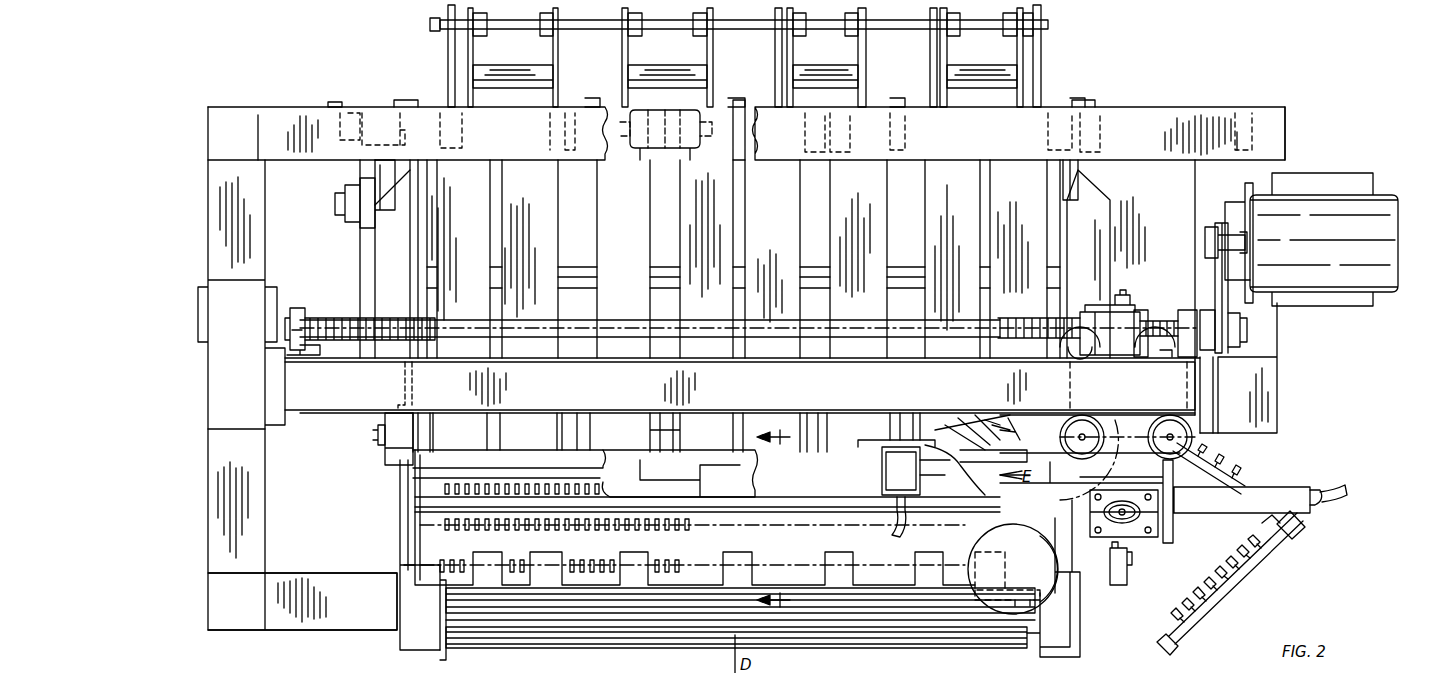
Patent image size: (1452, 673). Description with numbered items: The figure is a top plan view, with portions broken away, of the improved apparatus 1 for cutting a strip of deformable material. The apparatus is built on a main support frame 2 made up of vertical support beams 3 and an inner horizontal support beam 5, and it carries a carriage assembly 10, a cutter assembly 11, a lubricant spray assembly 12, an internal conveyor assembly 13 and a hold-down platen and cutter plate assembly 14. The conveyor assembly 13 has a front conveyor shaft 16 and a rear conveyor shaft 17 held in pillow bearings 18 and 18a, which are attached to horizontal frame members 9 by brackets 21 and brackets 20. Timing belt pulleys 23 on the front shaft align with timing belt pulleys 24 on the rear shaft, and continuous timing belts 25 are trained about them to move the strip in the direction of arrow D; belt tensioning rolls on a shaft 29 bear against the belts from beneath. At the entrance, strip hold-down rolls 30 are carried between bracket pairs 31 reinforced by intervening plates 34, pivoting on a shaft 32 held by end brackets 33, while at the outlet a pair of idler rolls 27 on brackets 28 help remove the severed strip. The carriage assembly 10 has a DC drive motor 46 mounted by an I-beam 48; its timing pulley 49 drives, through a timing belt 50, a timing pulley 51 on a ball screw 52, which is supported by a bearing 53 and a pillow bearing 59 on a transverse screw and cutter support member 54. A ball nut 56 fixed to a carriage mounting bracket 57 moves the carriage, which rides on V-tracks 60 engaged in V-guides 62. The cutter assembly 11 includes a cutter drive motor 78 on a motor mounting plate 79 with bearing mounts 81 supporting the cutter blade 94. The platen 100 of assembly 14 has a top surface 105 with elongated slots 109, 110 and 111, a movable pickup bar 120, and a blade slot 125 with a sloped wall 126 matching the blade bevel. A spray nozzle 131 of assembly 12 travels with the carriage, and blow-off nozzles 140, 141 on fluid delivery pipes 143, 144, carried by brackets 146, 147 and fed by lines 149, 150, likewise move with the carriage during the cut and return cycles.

The improved apparatus 1 is at (1322, 115).
The main support frame 2 is at (203, 510).
The vertical support beams 3 is at (232, 160).
The inner horizontal support beam 5 is at (310, 585).
The horizontal frame members 9 is at (400, 295).
The carriage assembly 10 is at (1126, 265).
The cutter assembly 11 is at (972, 600).
The lubricant spray assembly 12 is at (1215, 452).
The internal conveyor assembly 13 is at (455, 248).
The hold-down platen and cutter plate assembly 14 is at (438, 543).
The front conveyor shaft 16 is at (378, 432).
The rear conveyor shaft 17 is at (340, 125).
The pillow bearings 18 is at (390, 458).
The pillow bearings 18a is at (408, 103).
The brackets 20 is at (1080, 182).
The brackets 21 is at (392, 383).
The timing belt pulleys 23 is at (600, 430).
The timing belt pulleys 24 is at (590, 103).
The timing belts 25 is at (725, 211).
The idler rolls 27 is at (838, 600).
The brackets 28 is at (432, 630).
The shaft 29 is at (820, 275).
The strip hold-down rolls 30 is at (640, 150).
The bracket pairs 31 is at (855, 47).
The shaft 32 is at (665, 28).
The end brackets 33 is at (452, 63).
The intervening plate 34 is at (505, 80).
The DC drive motor 46 is at (1365, 262).
The I-beam 48 is at (1268, 365).
The timing pulley 49 is at (1208, 240).
The timing belt 50 is at (1225, 300).
The timing pulley 51 is at (1228, 345).
The ball screw 52 is at (1015, 315).
The bearing 53 is at (1188, 312).
The screw and cutter support member 54 is at (855, 393).
The ball nut 56 is at (1122, 345).
The carriage mounting bracket 57 is at (1138, 345).
The pillow bearing 59 is at (297, 308).
The V-tracks 60 is at (705, 355).
The V-guides 62 is at (1078, 432).
The cutter drive motor 78 is at (1035, 563).
The motor mounting plate 79 is at (1170, 480).
The bearing mounts 81 is at (1150, 525).
The cutter blade 94 is at (1100, 415).
The platen 100 is at (428, 572).
The top surface 105 is at (845, 538).
The elongated slots 109 is at (610, 486).
The elongated slots 110 is at (445, 525).
The elongated slots 111 is at (685, 565).
The pickup bar 120 is at (455, 470).
The blade slot 125 is at (790, 505).
The sloped wall 126 is at (745, 510).
The spray nozzle 131 is at (1128, 575).
The blow-off nozzle 140 is at (1210, 470).
The blow-off nozzle 141 is at (1005, 420).
The fluid delivery pipe 143 is at (1238, 478).
The fluid delivery pipe 144 is at (965, 425).
The bracket 146 is at (1295, 528).
The bracket 147 is at (915, 473).
The line 149 is at (1352, 500).
The line 150 is at (900, 520).